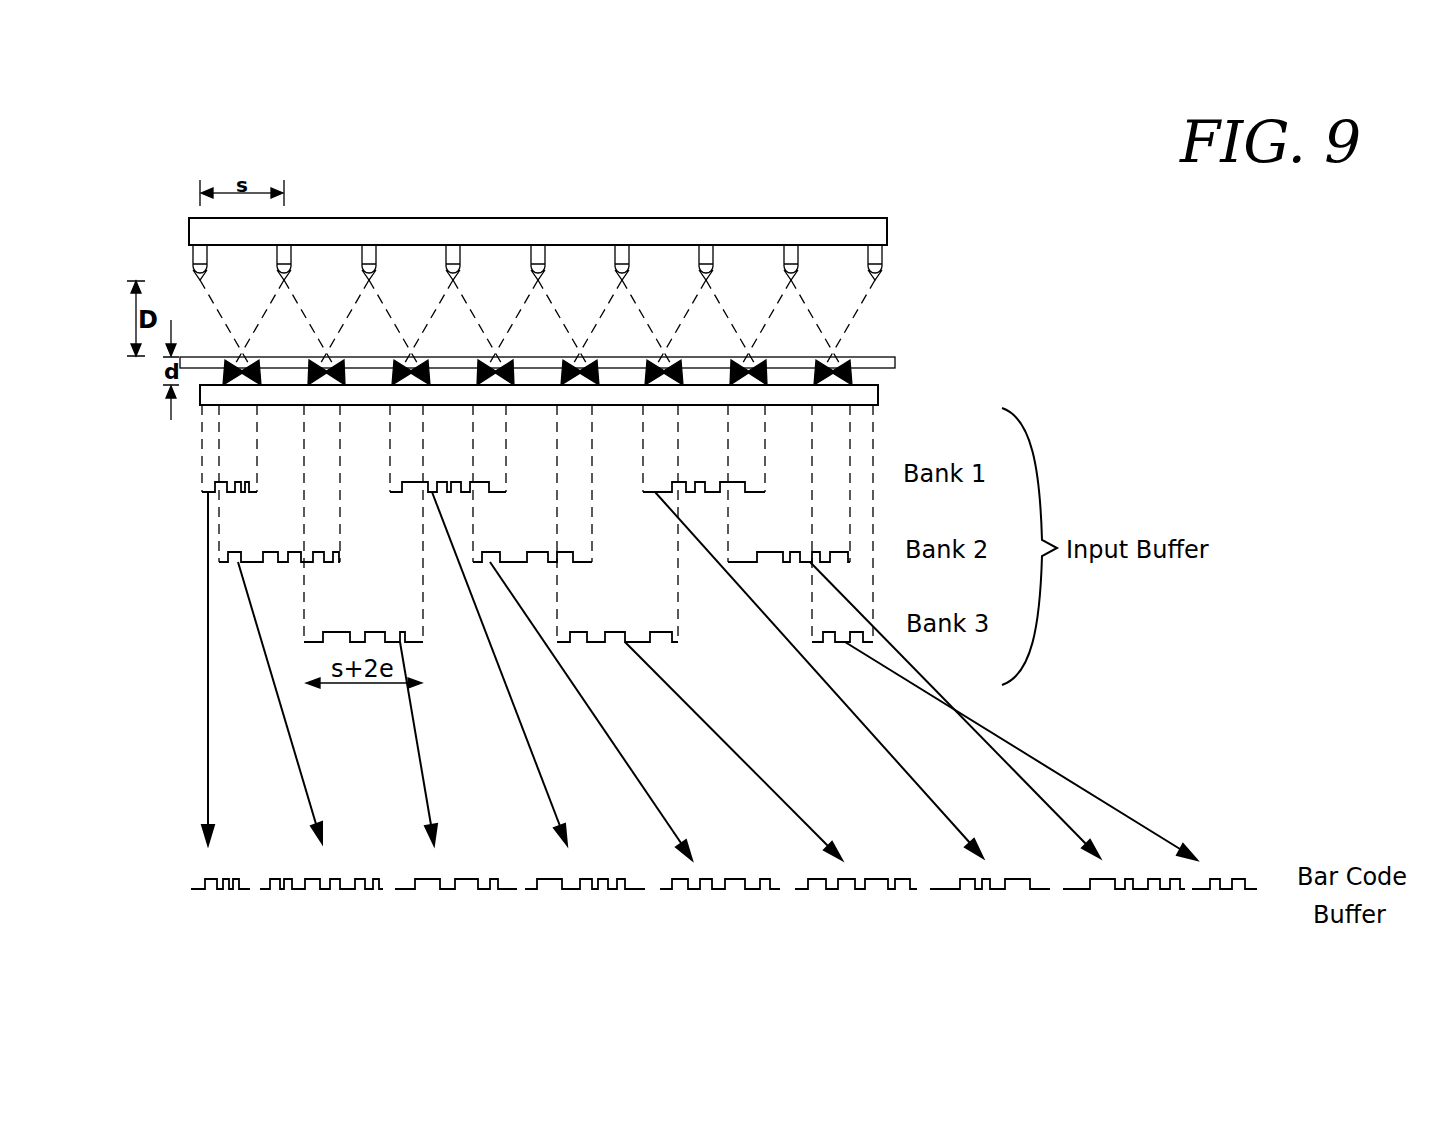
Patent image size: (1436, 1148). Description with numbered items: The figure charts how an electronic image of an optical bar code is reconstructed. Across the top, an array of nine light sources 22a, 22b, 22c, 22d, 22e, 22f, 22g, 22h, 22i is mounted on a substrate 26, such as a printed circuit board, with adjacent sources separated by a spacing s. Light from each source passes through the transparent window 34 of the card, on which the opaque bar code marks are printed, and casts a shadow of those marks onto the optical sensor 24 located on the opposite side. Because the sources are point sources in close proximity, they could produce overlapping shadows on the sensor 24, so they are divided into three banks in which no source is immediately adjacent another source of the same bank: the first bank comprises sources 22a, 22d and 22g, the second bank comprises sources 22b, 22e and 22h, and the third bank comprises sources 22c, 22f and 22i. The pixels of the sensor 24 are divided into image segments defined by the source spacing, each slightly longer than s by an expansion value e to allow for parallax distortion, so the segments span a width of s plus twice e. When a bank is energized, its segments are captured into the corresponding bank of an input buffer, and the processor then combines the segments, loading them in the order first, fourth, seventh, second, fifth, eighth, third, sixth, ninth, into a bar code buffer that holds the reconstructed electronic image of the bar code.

The light source 22a is at (194, 262).
The light source 22b is at (293, 253).
The light source 22c is at (364, 253).
The light source 22d is at (448, 257).
The light source 22e is at (533, 257).
The light source 22f is at (612, 255).
The light source 22g is at (703, 260).
The light source 22h is at (782, 259).
The light source 22i is at (883, 253).
The substrate 26 is at (845, 218).
The transparent window 34 is at (880, 338).
The optical sensor 24 is at (880, 396).